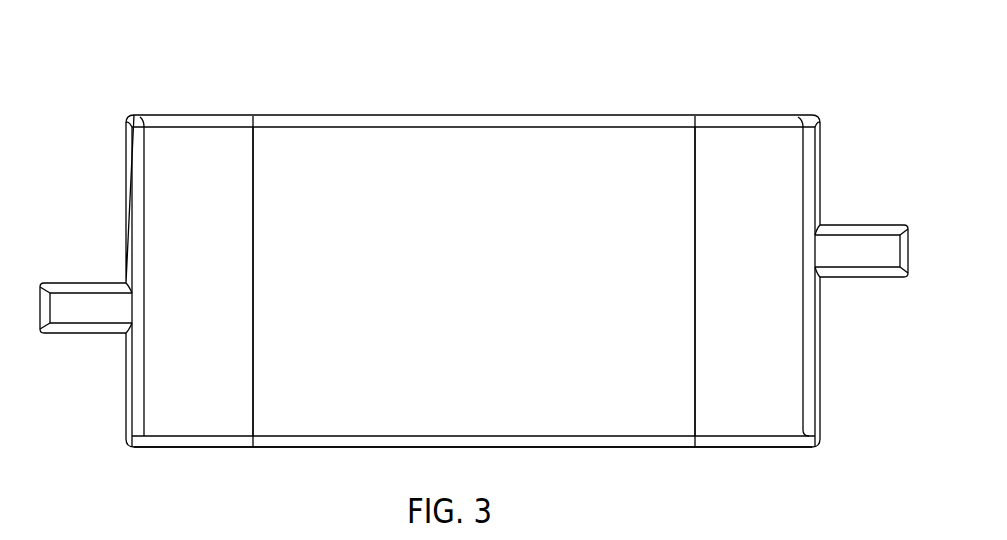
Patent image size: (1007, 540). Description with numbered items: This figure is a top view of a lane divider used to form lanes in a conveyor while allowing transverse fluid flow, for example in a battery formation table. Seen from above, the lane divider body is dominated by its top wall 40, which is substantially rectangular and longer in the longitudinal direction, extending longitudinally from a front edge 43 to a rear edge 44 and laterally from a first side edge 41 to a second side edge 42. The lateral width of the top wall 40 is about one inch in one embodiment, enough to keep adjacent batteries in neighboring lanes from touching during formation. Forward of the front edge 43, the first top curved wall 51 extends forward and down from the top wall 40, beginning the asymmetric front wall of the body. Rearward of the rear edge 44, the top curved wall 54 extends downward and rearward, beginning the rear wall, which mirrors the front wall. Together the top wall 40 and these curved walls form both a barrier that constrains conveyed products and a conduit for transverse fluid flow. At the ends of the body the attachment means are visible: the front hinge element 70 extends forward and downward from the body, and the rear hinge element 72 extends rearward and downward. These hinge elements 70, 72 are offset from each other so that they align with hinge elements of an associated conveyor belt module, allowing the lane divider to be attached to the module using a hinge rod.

The top wall 40 is at (454, 165).
The first side edge 41 is at (606, 112).
The second side edge 42 is at (640, 448).
The front edge 43 is at (695, 115).
The rear edge 44 is at (253, 116).
The first top curved wall 51 is at (767, 150).
The top curved wall 54 is at (187, 162).
The front hinge element 70 is at (68, 313).
The rear hinge element 72 is at (862, 255).